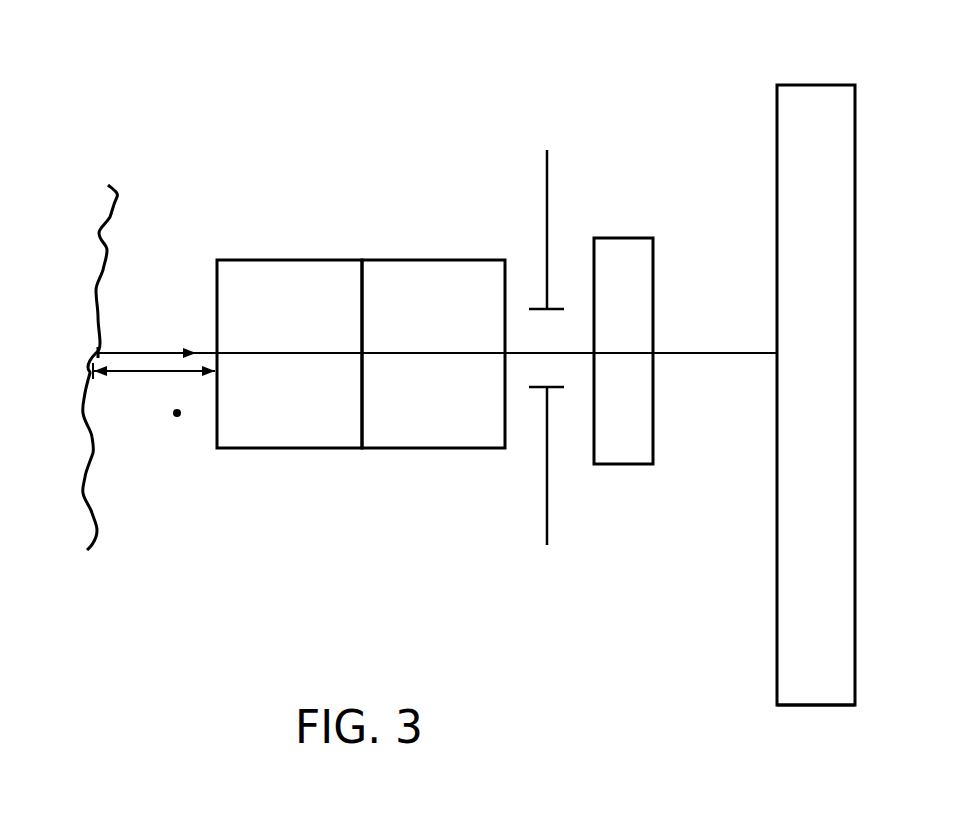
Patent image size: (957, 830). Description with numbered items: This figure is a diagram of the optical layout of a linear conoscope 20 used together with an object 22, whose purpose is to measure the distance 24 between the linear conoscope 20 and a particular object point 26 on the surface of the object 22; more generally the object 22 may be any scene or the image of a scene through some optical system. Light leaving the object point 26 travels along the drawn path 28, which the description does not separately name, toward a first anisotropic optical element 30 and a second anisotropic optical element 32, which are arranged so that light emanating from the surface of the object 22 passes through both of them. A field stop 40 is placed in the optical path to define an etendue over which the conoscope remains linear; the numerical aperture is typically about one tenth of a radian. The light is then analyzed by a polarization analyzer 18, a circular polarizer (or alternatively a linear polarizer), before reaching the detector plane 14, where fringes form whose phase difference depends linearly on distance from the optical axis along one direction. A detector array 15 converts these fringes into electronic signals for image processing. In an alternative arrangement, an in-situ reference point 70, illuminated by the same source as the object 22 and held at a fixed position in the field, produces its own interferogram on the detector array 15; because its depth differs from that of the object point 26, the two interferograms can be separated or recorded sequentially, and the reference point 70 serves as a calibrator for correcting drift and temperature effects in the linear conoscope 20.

The linear conoscope 20 is at (497, 46).
The object 22 is at (82, 485).
The object point 26 is at (97, 353).
The optical axis / light beam 28 is at (133, 352).
The distance 24 is at (132, 375).
The in-situ reference point 70 is at (177, 417).
The first anisotropic optical element 30 is at (278, 452).
The second anisotropic optical element 32 is at (428, 452).
The field stop 40 is at (546, 167).
The polarization analyzer 18 is at (617, 467).
The detector plane 14 is at (777, 670).
The detector array 15 is at (820, 708).